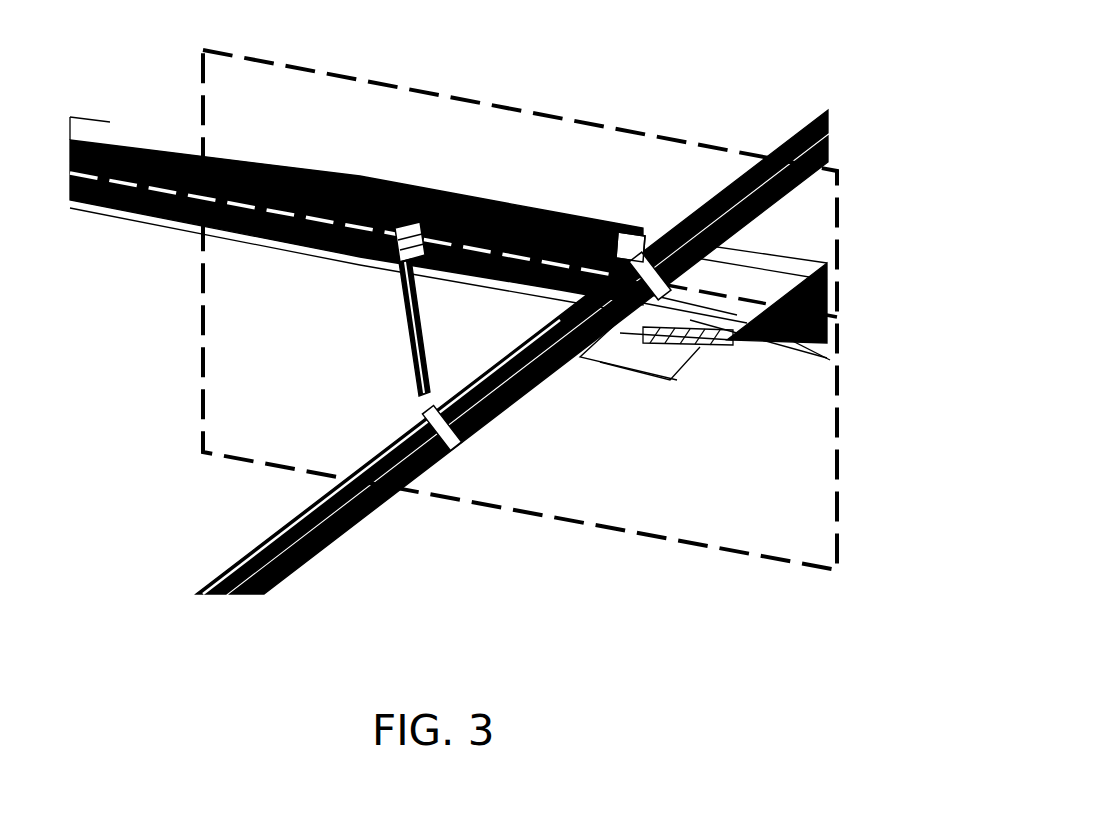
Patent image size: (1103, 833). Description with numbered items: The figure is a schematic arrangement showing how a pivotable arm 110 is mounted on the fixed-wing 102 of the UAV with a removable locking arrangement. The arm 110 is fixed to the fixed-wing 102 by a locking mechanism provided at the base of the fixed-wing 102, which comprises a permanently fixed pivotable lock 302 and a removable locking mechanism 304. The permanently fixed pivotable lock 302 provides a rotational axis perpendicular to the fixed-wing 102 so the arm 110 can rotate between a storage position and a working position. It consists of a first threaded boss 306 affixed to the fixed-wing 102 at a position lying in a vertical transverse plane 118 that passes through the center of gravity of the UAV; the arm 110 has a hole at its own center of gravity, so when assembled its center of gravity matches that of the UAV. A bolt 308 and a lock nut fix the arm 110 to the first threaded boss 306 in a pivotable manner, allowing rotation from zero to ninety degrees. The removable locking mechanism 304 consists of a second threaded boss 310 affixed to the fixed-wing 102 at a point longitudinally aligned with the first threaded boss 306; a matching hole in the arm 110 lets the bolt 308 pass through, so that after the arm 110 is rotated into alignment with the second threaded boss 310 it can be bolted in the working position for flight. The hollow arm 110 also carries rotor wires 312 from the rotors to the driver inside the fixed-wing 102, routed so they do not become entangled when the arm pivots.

The fixed-wing 102 is at (212, 308).
The pivotable arm 110 is at (532, 398).
The vertical transverse plane 118 is at (837, 195).
The permanently fixed pivotable lock 302 is at (625, 205).
The removable locking mechanism 304 is at (458, 462).
The first threaded boss 306 is at (652, 248).
The bolt 308 is at (623, 230).
The second threaded boss 310 is at (428, 424).
The rotor wires 312 is at (690, 378).